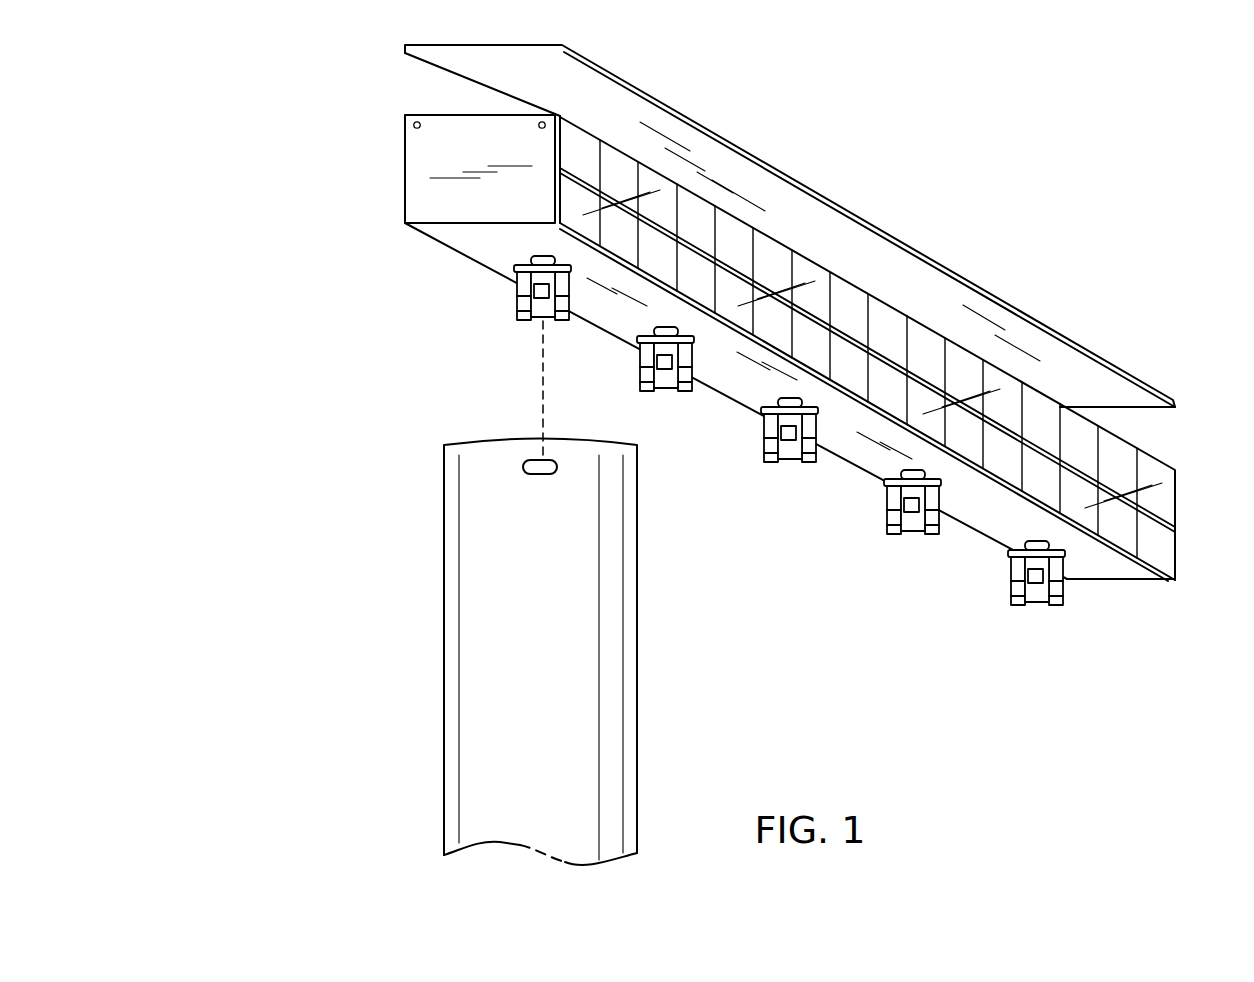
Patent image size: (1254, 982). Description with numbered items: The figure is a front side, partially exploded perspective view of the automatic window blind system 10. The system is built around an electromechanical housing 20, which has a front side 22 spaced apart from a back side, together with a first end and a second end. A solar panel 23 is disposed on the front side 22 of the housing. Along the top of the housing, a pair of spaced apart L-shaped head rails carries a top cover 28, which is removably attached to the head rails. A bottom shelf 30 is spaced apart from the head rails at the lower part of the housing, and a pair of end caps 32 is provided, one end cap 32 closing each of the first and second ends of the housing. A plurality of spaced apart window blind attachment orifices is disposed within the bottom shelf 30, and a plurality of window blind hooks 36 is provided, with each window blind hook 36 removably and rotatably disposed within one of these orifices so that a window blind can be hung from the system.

The automatic window blind system 10 is at (368, 131).
The electromechanical housing 20 is at (408, 224).
The front side 22 is at (1173, 546).
The solar panel 23 is at (1040, 432).
The top cover 28 is at (758, 165).
The bottom shelf 30 is at (1107, 567).
The end cap 32 is at (413, 180).
The window blind hook 36 is at (535, 320).